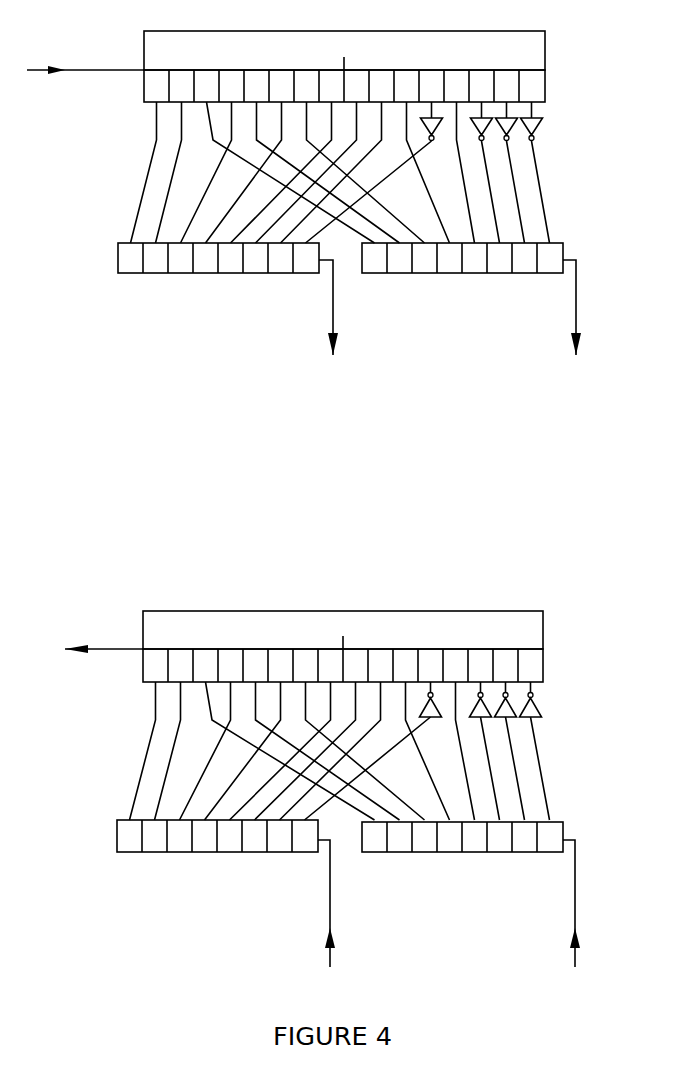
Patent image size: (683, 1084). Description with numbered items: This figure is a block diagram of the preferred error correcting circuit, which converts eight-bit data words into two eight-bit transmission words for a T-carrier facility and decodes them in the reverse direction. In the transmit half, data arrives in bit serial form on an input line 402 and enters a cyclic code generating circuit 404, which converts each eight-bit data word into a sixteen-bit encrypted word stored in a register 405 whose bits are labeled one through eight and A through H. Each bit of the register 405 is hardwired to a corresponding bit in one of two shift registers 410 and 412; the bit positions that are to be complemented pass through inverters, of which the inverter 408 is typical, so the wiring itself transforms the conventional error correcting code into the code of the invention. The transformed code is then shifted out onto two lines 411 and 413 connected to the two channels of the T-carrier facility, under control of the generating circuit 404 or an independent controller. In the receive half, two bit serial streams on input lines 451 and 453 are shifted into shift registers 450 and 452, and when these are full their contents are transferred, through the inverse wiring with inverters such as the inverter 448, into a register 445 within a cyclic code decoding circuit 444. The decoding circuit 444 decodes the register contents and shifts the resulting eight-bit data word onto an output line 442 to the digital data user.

The input line 402 is at (85, 102).
The cyclic code generating circuit 404 is at (535, 57).
The 16-bit register 405 is at (560, 90).
The inverter 408 is at (533, 127).
The shift register 410 is at (132, 264).
The line 411 is at (333, 308).
The shift register 412 is at (375, 268).
The line 413 is at (576, 310).
The output line 442 is at (104, 683).
The cyclic code decoding circuit 444 is at (533, 636).
The 16-bit register 445 is at (560, 670).
The inverter 448 is at (532, 712).
The shift register 450 is at (130, 843).
The input line 451 is at (330, 888).
The shift register 452 is at (375, 847).
The input line 453 is at (575, 887).